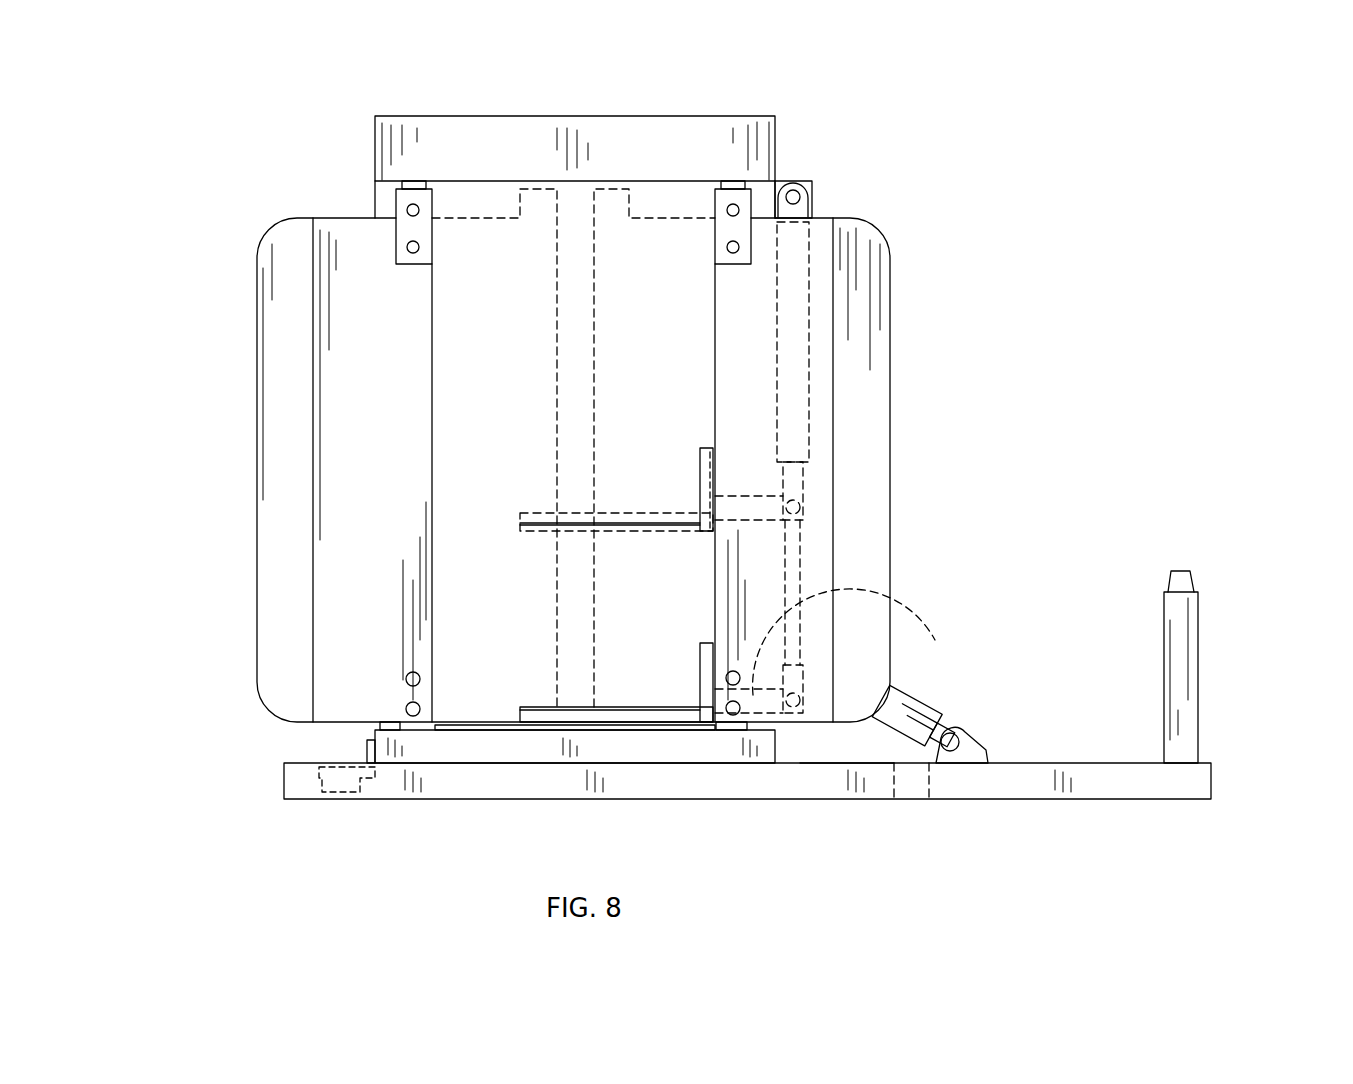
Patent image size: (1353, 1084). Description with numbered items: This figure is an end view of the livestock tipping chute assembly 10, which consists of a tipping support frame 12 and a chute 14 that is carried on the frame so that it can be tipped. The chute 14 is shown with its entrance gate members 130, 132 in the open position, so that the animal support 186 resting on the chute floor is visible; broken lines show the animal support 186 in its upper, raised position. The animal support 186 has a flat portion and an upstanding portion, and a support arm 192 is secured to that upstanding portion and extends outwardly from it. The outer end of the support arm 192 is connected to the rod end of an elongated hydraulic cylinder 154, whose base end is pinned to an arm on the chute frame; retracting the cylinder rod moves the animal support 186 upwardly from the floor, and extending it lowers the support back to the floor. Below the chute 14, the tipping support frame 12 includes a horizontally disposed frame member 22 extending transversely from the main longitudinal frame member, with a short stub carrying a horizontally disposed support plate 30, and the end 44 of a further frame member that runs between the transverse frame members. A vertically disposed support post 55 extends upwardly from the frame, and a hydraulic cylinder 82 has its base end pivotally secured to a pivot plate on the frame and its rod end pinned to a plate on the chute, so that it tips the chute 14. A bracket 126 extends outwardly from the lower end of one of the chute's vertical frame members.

The livestock tipping chute assembly 10 is at (992, 180).
The tipping support frame 12 is at (566, 828).
The chute 14 is at (916, 298).
The frame member 22 is at (862, 800).
The support plate 30 is at (350, 785).
The end 44 is at (915, 800).
The support post 55 is at (1178, 672).
The hydraulic cylinder 82 is at (930, 690).
The bracket 126 is at (367, 748).
The entrance gate member 130 is at (272, 432).
The entrance gate member 132 is at (875, 437).
The elongated hydraulic cylinder 154 is at (812, 362).
The animal support 186 is at (628, 505).
The support arm 192 is at (880, 598).